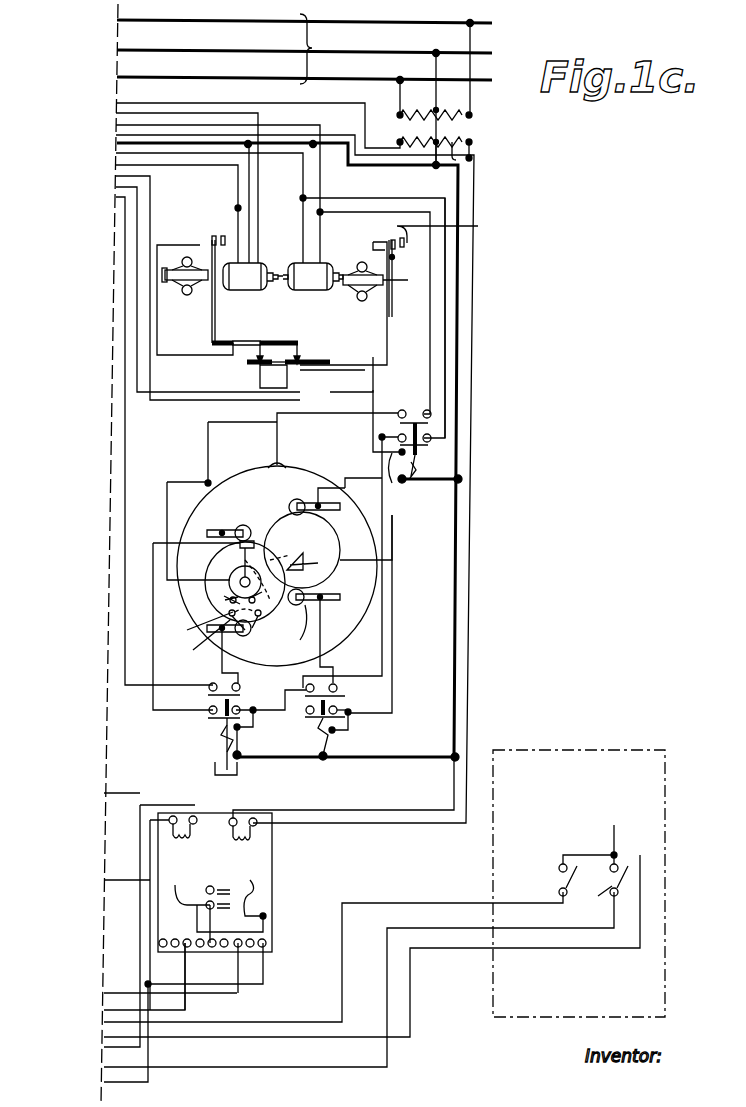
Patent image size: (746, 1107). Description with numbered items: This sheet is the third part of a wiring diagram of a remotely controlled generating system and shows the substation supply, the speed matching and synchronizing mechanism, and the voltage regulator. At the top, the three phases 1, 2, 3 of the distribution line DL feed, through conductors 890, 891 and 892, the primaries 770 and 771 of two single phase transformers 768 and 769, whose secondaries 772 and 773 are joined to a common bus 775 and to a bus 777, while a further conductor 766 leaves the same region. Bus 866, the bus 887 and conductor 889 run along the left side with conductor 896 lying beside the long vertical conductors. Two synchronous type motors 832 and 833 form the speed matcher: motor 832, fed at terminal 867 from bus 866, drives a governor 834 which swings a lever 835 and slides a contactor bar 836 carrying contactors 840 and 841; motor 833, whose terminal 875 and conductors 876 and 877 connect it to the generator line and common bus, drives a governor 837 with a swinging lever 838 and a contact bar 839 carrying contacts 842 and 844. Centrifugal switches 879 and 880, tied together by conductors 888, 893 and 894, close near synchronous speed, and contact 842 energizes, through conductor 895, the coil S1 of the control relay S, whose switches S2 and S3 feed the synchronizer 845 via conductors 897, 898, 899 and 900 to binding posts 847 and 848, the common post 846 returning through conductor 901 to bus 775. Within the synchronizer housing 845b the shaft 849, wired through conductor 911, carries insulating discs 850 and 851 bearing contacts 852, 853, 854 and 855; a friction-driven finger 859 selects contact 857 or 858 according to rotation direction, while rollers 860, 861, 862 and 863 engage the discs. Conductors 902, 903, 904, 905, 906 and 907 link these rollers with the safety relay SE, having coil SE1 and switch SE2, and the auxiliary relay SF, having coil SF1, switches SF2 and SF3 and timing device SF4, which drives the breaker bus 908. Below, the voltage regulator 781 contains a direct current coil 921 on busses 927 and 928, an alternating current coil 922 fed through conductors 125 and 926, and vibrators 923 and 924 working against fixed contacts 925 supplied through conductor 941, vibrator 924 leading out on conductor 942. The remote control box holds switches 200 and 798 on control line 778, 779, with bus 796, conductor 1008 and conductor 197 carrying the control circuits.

The phase of the distribution line 1 is at (268, 24).
The phase of the distribution line 2 is at (263, 52).
The phase of the distribution line 3 is at (261, 80).
The direct-current lines DL is at (322, 49).
The conductor 125 is at (300, 810).
The conductor 197 is at (106, 1067).
The switch 200 is at (558, 883).
The conductor 766 is at (330, 105).
The single phase transformer 768 is at (408, 128).
The single phase transformer 769 is at (460, 138).
The primary 770 is at (400, 115).
The primary 771 is at (471, 115).
The secondary 772 is at (420, 150).
The secondary 773 is at (452, 150).
The common bus 775 is at (359, 157).
The bus 777 is at (347, 143).
The control line side 778 is at (638, 846).
The control line side 779 is at (612, 828).
The voltage regulating device 781 is at (210, 836).
The bus 796 is at (106, 1037).
The switch 798 is at (603, 890).
The motor 832 is at (248, 284).
The motor 833 is at (314, 284).
The governor 834 is at (185, 296).
The lever 835 is at (210, 335).
The contactor bar 836 is at (268, 342).
The governor 837 is at (361, 300).
The swinging lever 838 is at (388, 338).
The contact bar 839 is at (335, 362).
The contactor 840 is at (256, 364).
The contactor 841 is at (302, 356).
The contact 842 is at (260, 365).
The contact 844 is at (339, 378).
The synchronizing device 845 is at (393, 563).
The commutator housing 845b is at (277, 566).
The common binding post 846 is at (343, 487).
The binding post 847 is at (212, 480).
The binding post 848 is at (270, 462).
The shaft 849 is at (301, 565).
The disc 850 is at (330, 556).
The disc 851 is at (218, 597).
The contact 852 is at (322, 590).
The contact 853 is at (222, 552).
The contact 854 is at (195, 640).
The contact 855 is at (258, 618).
The contact 857 is at (196, 623).
The contact 858 is at (264, 592).
The finger 859 is at (230, 580).
The contact roller 860 is at (294, 500).
The contact roller 861 is at (300, 630).
The roller 862 is at (245, 525).
The roller 863 is at (245, 636).
The bus 866 is at (208, 288).
The terminal 867 is at (236, 230).
The terminal 875 is at (386, 252).
The conductor 876 is at (320, 186).
The conductor 877 is at (303, 250).
The centrifugal switch 879 is at (210, 240).
The centrifugal switch 880 is at (406, 255).
The bus 887 is at (137, 238).
The conductor 888 is at (165, 357).
The conductor 889 is at (172, 113).
The conductor 890 is at (400, 95).
The conductor 891 is at (433, 70).
The conductor 892 is at (471, 46).
The conductor 893 is at (258, 270).
The conductor 894 is at (478, 226).
The conductor 895 is at (374, 392).
The conductor 896 is at (446, 333).
The conductor 897 is at (431, 311).
The conductor 898 is at (446, 386).
The conductor 899 is at (279, 440).
The conductor 900 is at (206, 439).
The conductor 901 is at (345, 489).
The conductor 902 is at (393, 613).
The conductor 903 is at (383, 538).
The conductor 904 is at (328, 688).
The conductor 905 is at (284, 702).
The conductor 906 is at (152, 698).
The conductor 907 is at (221, 668).
The bus 908 is at (126, 470).
The conductor 911 is at (167, 507).
The direct current coil 921 is at (181, 841).
The alternating current coil 922 is at (239, 842).
The vibrator 923 is at (86, 1004).
The vibrator 924 is at (230, 924).
The fixed contacts 925 is at (236, 894).
The conductor 926 is at (418, 824).
The bus 927 is at (158, 1088).
The bus 928 is at (172, 806).
The conductor 941 is at (226, 990).
The conductor 942 is at (106, 993).
The conductor 1008 is at (420, 903).
The control relay S is at (424, 465).
The coil S1 is at (418, 468).
The normally open switch S2 is at (430, 446).
The normally open switch S3 is at (432, 422).
The auxiliary relay SF is at (236, 743).
The coil SF1 is at (217, 738).
The normally open switch SF2 is at (208, 719).
The normally open switch SF3 is at (208, 696).
The timing device SF4 is at (213, 769).
The safety relay SE is at (335, 745).
The coil SE1 is at (318, 740).
The normally open switch SE2 is at (348, 722).